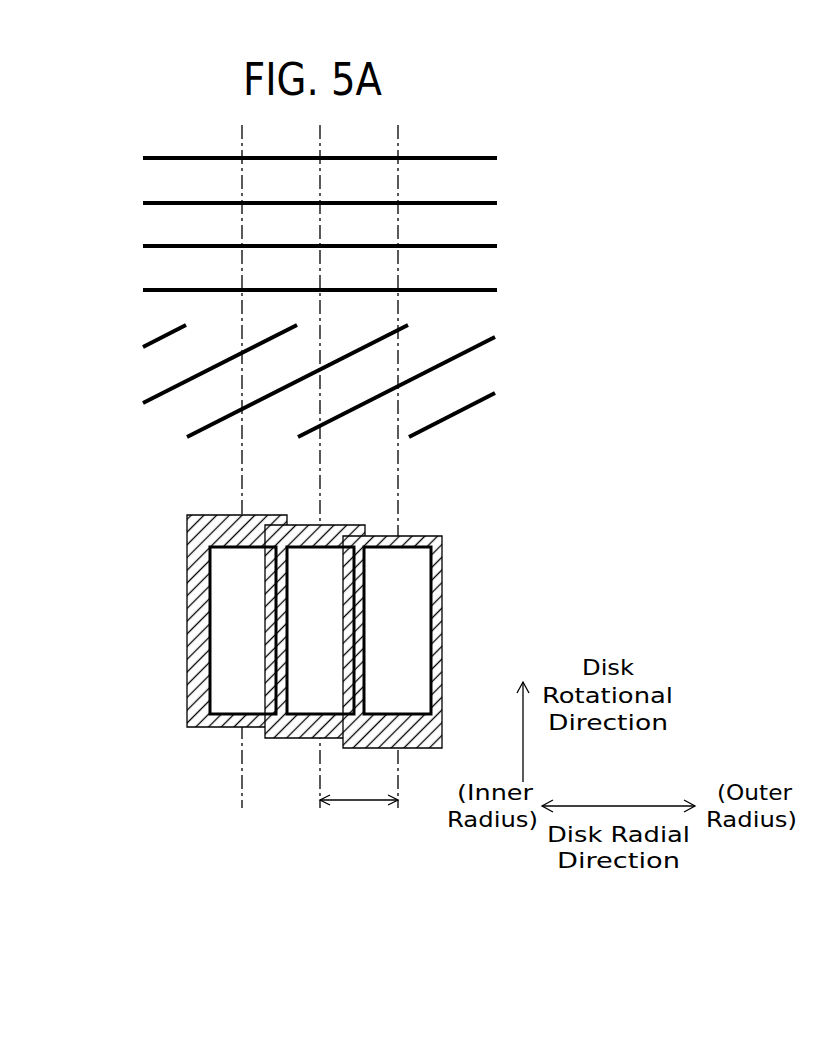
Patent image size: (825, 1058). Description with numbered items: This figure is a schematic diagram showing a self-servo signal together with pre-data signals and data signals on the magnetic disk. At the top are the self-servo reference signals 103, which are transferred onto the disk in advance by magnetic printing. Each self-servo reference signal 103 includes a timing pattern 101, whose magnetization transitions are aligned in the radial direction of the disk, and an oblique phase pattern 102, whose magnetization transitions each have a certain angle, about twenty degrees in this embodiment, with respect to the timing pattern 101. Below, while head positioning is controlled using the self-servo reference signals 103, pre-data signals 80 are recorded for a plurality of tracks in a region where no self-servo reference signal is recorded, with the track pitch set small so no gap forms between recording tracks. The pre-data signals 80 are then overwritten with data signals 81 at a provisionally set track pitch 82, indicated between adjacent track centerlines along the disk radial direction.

The pre-data signals 80 is at (443, 607).
The data signals 81 is at (415, 555).
The track pitch 82 is at (358, 802).
The timing pattern 101 is at (510, 155).
The oblique phase pattern 102 is at (359, 379).
The self-servo reference signals 103 is at (414, 296).